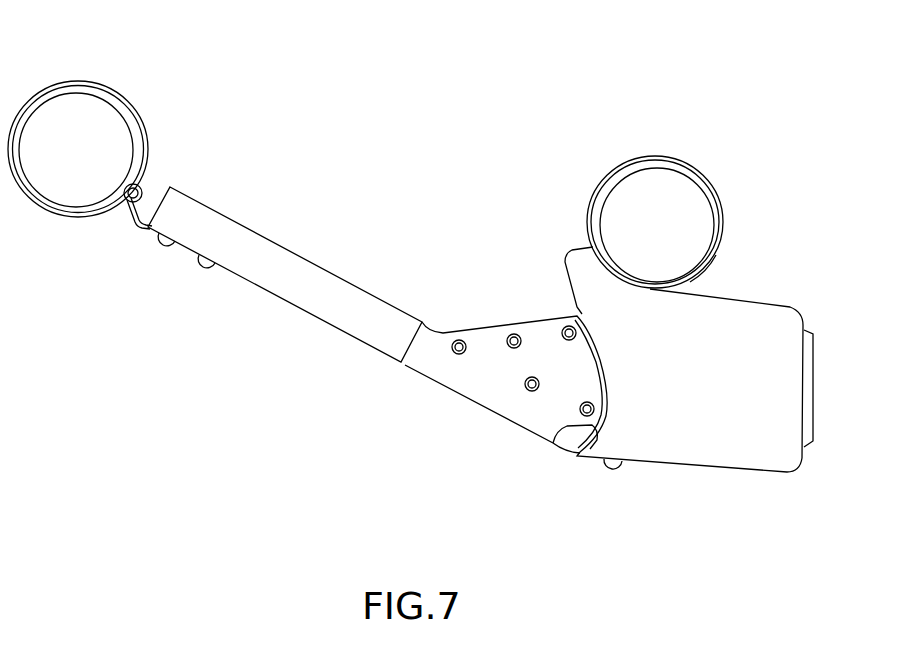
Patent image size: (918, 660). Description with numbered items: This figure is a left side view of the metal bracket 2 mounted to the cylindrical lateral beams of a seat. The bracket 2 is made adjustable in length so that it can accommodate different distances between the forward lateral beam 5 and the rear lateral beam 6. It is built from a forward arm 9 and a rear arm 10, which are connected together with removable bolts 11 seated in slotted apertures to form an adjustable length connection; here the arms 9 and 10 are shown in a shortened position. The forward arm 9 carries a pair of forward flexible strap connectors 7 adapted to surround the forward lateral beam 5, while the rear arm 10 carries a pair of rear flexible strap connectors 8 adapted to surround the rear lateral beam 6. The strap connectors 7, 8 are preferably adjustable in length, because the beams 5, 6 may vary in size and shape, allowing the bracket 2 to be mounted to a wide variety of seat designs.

The bracket 2 is at (410, 262).
The forward lateral beam 5 is at (92, 93).
The rear lateral beam 6 is at (682, 172).
The forward flexible strap connector 7 is at (150, 168).
The rear flexible strap connector 8 is at (705, 277).
The forward arm 9 is at (233, 220).
The rear arm 10 is at (508, 323).
The removable bolts 11 is at (163, 248).